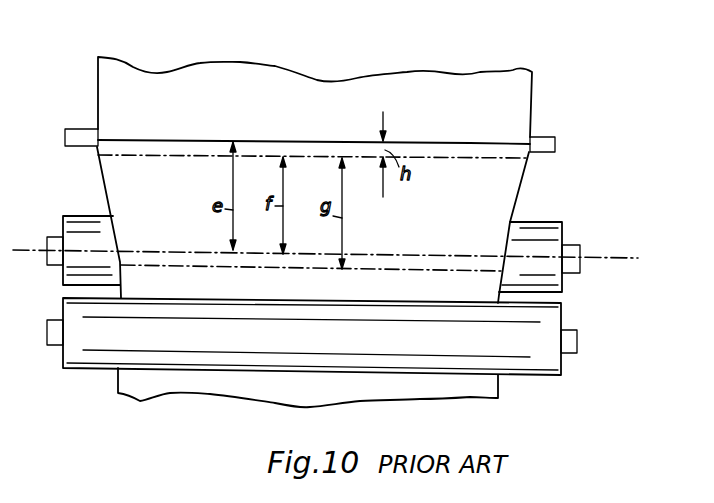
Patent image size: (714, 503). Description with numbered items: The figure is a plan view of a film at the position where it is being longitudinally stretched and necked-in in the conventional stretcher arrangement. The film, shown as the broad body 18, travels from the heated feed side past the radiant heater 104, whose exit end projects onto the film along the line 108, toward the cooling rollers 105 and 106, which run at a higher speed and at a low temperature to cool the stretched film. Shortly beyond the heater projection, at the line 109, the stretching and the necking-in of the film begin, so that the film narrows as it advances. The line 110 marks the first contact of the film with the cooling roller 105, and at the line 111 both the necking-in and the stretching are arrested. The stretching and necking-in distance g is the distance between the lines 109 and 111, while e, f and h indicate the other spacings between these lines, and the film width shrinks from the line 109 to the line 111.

The frame body 18 is at (461, 104).
The radiant heater 104 is at (557, 146).
The cooling roller 105 is at (548, 234).
The cooling roller 106 is at (548, 320).
The projection of the exit end of the radiation sources 108 is at (507, 143).
The line where stretching and necking-in start 109 is at (512, 158).
The line of first contact with the cooling roller 110 is at (482, 254).
The line where necking-in and stretching are arrested 111 is at (445, 272).